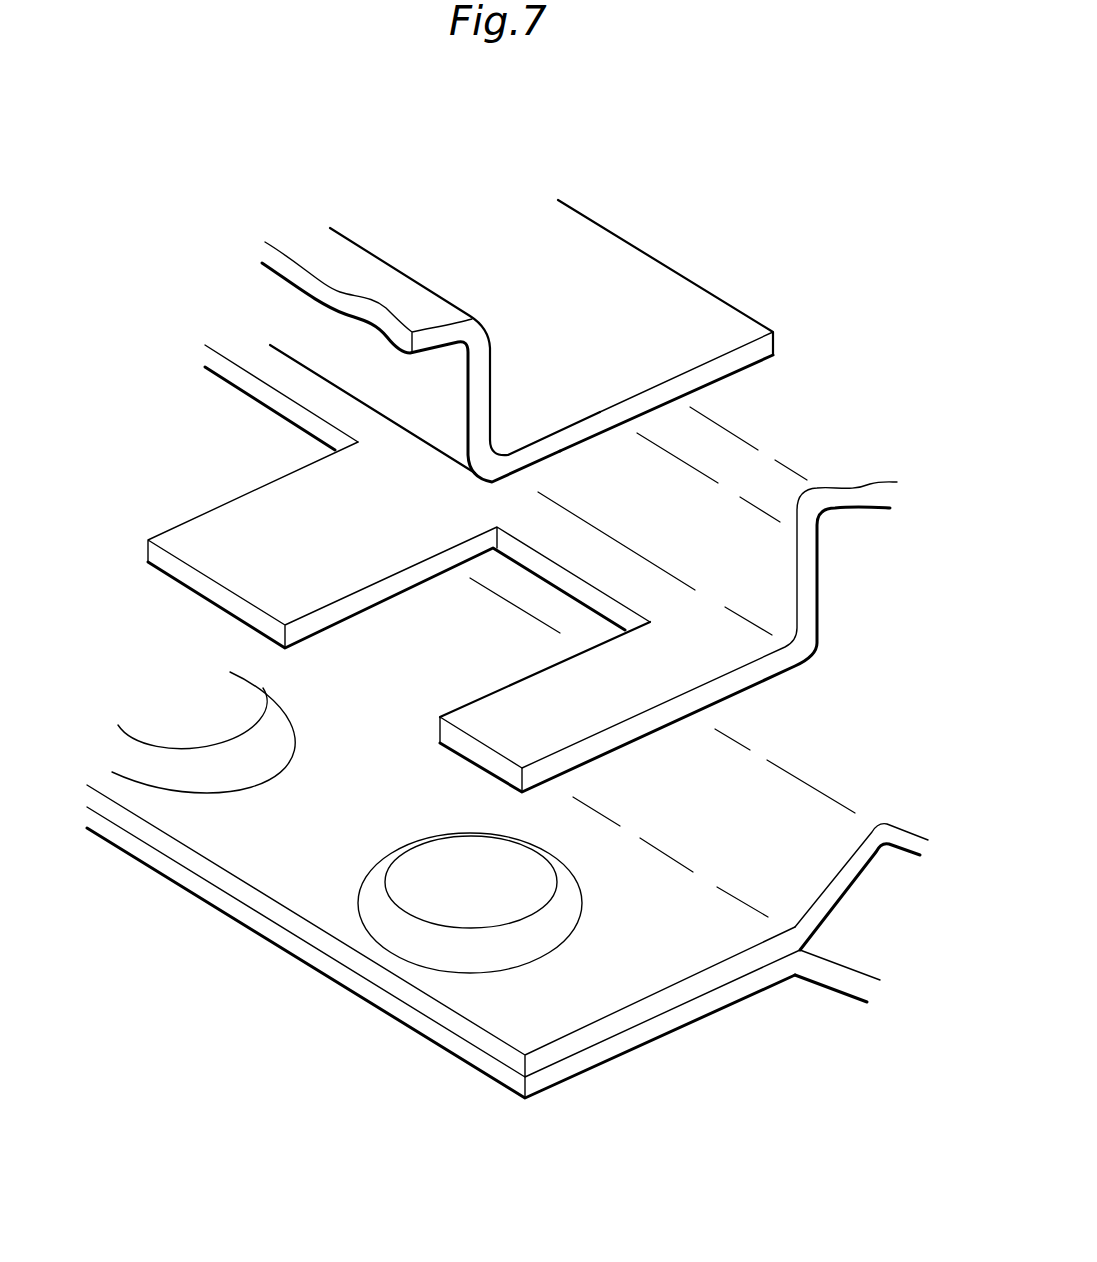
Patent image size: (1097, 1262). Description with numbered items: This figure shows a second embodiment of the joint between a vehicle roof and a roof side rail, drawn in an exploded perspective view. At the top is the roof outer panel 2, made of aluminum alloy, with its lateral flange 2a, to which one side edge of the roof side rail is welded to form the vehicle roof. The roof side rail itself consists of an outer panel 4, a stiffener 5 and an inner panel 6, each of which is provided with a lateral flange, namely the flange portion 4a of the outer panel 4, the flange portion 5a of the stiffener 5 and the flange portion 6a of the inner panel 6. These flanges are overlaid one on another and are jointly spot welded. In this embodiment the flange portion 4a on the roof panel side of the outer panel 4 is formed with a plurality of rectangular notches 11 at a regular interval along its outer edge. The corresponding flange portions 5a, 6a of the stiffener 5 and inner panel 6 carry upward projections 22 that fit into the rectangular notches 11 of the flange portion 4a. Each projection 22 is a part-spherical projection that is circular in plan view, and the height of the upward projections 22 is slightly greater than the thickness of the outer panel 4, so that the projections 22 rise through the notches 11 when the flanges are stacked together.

The roof outer panel 2 is at (348, 258).
The lateral flange 2a is at (668, 287).
The rectangular notch 11 is at (232, 373).
The outer panel 4 is at (852, 497).
The flange portion 4a is at (180, 570).
The upward projection 22 is at (196, 712).
The stiffener 5 is at (898, 832).
The inner panel 6 is at (840, 978).
The flange portion 5a is at (418, 1000).
The flange portion 6a is at (483, 1063).